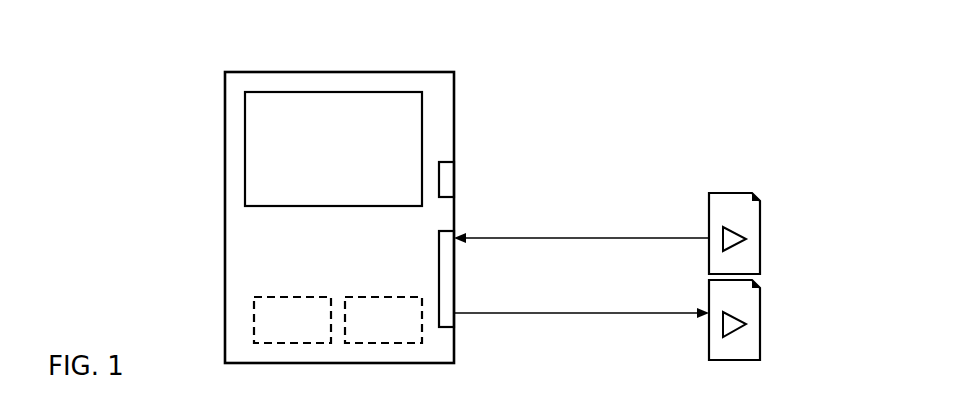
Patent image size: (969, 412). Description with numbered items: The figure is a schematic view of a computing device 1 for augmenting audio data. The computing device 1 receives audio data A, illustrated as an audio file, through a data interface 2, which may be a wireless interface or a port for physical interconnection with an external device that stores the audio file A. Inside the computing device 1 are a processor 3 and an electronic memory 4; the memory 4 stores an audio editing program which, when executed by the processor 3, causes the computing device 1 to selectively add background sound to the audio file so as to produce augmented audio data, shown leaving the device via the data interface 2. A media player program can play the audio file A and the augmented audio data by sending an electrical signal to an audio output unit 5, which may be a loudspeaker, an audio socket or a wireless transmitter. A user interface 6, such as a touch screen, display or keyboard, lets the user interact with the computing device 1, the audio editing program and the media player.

The computing device 1 is at (466, 125).
The data interface 2 is at (455, 280).
The processor 3 is at (292, 320).
The electronic memory 4 is at (383, 320).
The audio output unit 5 is at (455, 174).
The user interface 6 is at (333, 149).
The audio data A is at (760, 230).